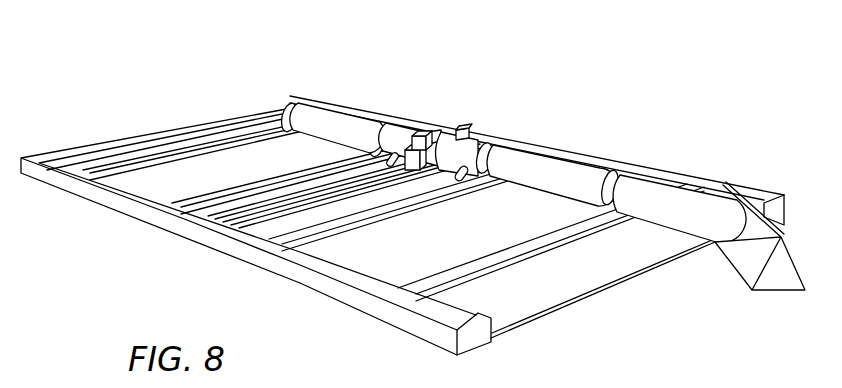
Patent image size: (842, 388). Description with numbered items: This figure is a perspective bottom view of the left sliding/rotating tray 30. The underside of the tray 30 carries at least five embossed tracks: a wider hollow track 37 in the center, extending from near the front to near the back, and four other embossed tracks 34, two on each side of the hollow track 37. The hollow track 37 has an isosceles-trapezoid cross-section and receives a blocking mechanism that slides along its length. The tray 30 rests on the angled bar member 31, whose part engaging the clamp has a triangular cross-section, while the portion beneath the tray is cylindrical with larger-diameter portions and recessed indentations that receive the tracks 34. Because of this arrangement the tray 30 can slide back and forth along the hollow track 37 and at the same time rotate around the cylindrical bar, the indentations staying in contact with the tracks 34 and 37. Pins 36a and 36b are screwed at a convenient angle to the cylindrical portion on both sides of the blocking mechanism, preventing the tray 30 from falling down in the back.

The sliding/rotating tray 30 is at (543, 292).
The angled bar member 31 is at (781, 279).
The embossed tracks 34 is at (100, 170).
The pin 36a is at (461, 181).
The pin 36b is at (386, 164).
The hollow track 37 is at (210, 221).